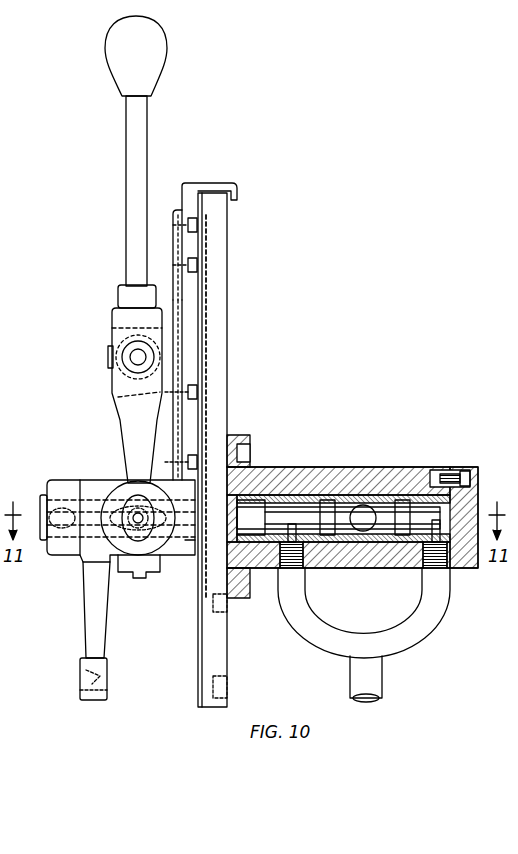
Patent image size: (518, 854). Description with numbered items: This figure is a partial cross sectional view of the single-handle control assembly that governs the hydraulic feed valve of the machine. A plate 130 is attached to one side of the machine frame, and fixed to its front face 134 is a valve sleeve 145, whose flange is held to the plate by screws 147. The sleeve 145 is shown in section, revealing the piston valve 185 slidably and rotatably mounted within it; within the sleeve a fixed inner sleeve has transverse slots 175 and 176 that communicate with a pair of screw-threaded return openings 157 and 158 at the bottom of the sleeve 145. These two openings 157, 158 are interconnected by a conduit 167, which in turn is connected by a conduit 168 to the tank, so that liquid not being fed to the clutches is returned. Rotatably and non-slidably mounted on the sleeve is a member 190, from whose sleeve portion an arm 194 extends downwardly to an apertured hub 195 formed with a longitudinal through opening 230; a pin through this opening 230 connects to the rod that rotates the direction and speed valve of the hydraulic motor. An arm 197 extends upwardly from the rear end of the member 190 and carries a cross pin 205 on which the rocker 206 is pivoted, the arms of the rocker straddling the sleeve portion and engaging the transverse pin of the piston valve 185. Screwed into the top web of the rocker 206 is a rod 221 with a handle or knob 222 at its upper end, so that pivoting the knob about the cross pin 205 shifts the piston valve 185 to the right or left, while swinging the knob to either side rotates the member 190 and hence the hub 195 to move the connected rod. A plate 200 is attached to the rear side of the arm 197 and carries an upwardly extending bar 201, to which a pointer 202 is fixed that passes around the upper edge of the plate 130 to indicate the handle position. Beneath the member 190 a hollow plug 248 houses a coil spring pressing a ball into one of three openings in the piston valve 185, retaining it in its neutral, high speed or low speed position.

The handle or knob 222 is at (150, 47).
The rod 221 is at (126, 172).
The rocker 206 is at (98, 316).
The cross pin 205 is at (132, 362).
The arm 197 is at (118, 397).
The pointer 202 is at (210, 183).
The front face 134 is at (229, 262).
The plate 130 is at (215, 345).
The bar 201 is at (196, 377).
The plate 200 is at (168, 432).
The member 190 is at (66, 592).
The hollow plug 248 is at (153, 578).
The arm 194 is at (88, 625).
The apertured hub 195 is at (82, 694).
The longitudinal through opening 230 is at (105, 683).
The valve sleeve 145 is at (350, 472).
The screws 147 is at (247, 448).
The piston valve 185 is at (265, 577).
The transverse slot 175 is at (286, 505).
The transverse slot 176 is at (434, 520).
The screw-threaded opening 157 is at (296, 565).
The screw-threaded opening 158 is at (430, 565).
The conduit 167 is at (408, 640).
The conduit 168 is at (373, 685).